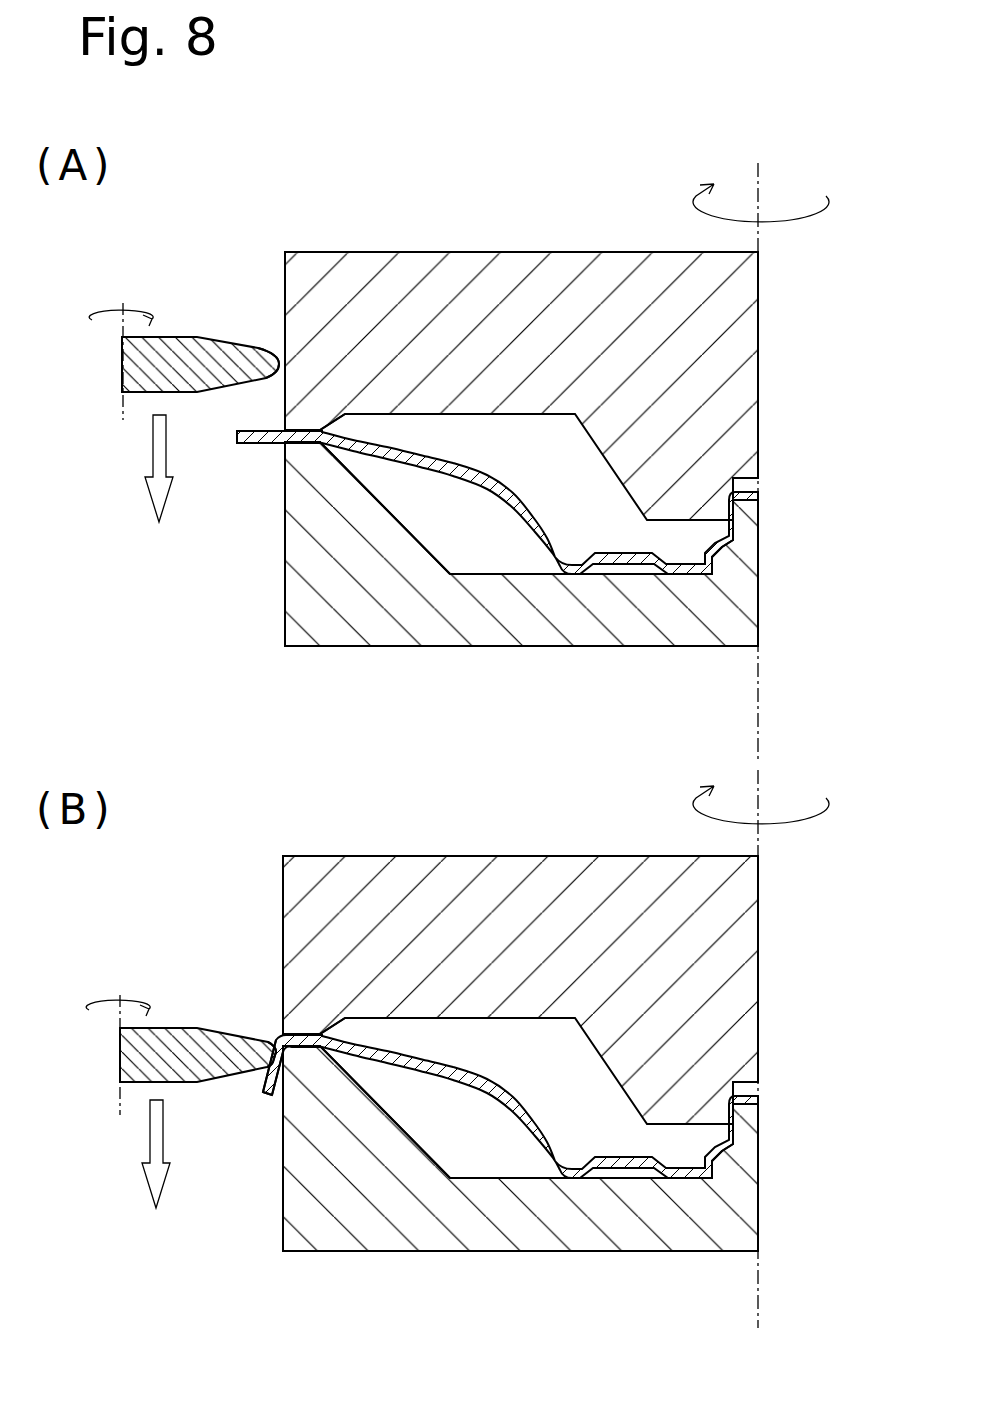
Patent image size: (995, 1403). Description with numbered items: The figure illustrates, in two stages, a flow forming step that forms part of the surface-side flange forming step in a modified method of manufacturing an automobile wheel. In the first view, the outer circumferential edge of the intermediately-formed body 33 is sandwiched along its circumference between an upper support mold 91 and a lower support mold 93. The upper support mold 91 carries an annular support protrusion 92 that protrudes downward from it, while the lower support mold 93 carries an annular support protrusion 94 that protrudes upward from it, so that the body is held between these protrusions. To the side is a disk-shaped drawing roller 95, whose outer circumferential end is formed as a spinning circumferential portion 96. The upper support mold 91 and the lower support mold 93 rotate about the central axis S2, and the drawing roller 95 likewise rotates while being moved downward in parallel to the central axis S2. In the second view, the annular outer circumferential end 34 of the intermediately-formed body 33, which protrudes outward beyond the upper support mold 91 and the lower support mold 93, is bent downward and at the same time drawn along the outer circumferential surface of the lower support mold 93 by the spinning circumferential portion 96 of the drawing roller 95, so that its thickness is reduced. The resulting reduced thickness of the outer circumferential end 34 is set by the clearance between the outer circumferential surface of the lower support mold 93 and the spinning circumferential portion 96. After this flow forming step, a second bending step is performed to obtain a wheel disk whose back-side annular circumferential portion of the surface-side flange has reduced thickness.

The intermediately-formed body 33 is at (578, 464).
The annular outer circumferential end 34 is at (267, 436).
The upper support mold 91 is at (597, 283).
The annular support protrusion 92 is at (305, 420).
The lower support mold 93 is at (527, 625).
The annular support protrusion 94 is at (305, 447).
The drawing roller 95 is at (160, 365).
The spinning circumferential portion 96 is at (268, 350).
The central axis S2 is at (758, 685).